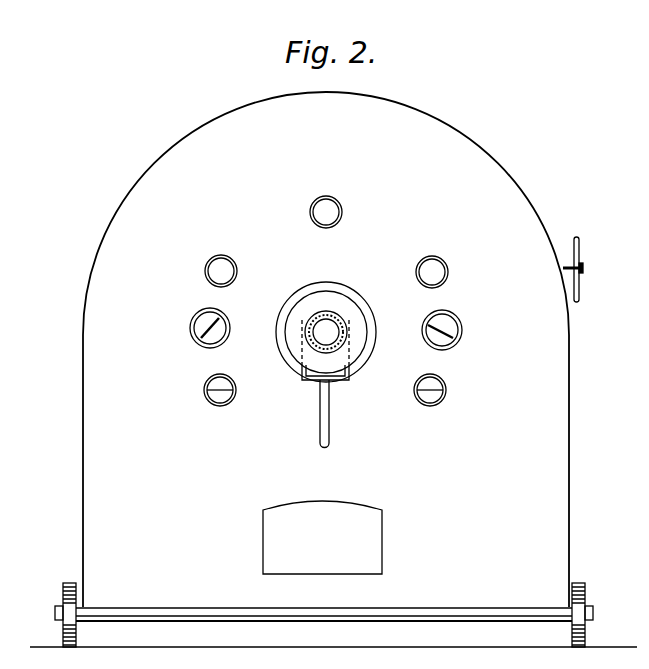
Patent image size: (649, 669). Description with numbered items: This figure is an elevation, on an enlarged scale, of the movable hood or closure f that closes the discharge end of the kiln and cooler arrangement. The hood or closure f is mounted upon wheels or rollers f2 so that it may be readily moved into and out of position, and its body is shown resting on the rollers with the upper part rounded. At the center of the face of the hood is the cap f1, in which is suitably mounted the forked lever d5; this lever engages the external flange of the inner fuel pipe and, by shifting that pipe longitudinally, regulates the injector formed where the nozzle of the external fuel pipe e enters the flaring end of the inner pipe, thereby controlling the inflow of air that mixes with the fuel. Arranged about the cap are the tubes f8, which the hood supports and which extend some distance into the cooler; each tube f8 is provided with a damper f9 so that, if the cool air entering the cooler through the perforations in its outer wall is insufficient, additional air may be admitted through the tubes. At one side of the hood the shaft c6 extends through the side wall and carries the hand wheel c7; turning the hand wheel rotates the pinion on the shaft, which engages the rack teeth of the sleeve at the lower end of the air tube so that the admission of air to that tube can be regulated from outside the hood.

The hood or closure f is at (326, 349).
The cap f1 is at (347, 308).
The external fuel pipe e is at (312, 338).
The forked lever d5 is at (329, 420).
The tubes f8 is at (226, 276).
The damper f9 is at (423, 333).
The shaft c6 is at (565, 267).
The hand wheel c7 is at (578, 300).
The wheels or rollers f2 is at (598, 590).